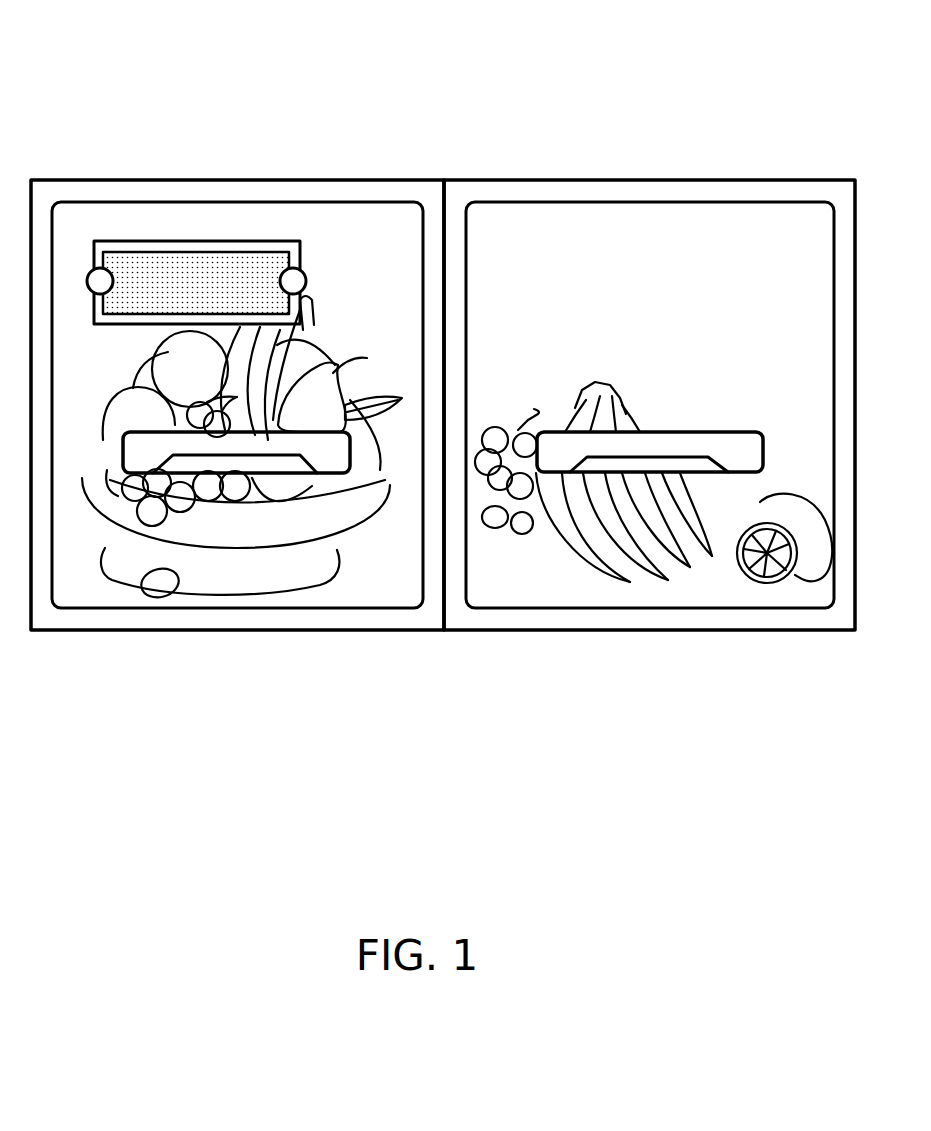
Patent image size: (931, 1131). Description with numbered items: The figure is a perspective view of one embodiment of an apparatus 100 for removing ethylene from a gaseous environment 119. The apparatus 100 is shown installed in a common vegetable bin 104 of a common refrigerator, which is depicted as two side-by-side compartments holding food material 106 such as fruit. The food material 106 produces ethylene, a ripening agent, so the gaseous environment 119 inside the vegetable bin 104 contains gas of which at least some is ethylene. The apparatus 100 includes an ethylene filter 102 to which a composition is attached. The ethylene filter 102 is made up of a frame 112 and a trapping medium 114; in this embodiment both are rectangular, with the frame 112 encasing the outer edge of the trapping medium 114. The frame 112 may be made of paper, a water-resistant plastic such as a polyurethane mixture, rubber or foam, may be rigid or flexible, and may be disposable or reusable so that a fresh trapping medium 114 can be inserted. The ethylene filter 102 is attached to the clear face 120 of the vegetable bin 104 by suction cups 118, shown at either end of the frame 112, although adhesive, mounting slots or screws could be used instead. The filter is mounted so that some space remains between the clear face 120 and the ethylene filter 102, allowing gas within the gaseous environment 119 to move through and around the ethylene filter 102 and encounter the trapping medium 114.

The apparatus 100 is at (185, 167).
The ethylene filter 102 is at (160, 240).
The vegetable bin 104 is at (395, 192).
The food material 106 is at (202, 488).
The frame 112 is at (216, 205).
The trapping medium 114 is at (250, 263).
The suction cups 118 is at (87, 283).
The gaseous environment 119 is at (607, 250).
The clear face 120 is at (372, 227).